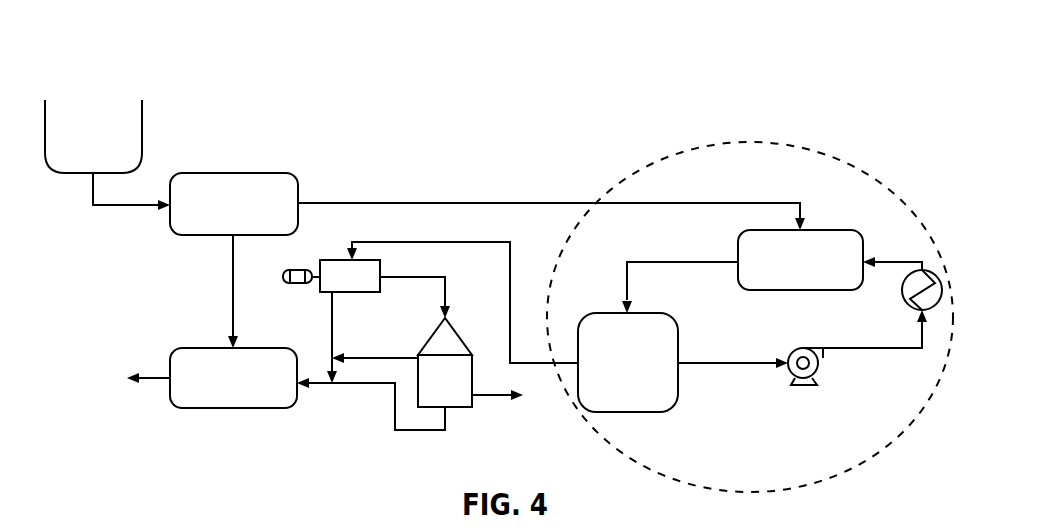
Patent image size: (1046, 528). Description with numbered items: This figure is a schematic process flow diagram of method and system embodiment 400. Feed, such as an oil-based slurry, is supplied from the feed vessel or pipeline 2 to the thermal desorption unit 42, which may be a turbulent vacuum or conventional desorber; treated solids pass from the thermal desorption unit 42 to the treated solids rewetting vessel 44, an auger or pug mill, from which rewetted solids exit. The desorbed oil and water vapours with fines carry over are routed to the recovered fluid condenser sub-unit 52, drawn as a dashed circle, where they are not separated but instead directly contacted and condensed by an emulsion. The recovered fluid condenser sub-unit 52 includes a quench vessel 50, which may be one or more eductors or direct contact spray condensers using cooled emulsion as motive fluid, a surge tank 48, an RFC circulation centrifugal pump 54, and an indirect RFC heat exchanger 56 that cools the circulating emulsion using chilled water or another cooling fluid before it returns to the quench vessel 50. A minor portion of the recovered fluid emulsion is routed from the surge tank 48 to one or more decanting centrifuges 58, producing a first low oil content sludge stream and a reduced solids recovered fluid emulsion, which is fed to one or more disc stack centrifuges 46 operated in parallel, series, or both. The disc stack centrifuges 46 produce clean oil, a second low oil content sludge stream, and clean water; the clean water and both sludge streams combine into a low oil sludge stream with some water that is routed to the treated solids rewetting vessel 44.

The method and system embodiment 400 is at (616, 78).
The feed vessel or pipeline 2 is at (142, 136).
The thermal desorption unit 42 is at (233, 173).
The decanting centrifuge 58 is at (345, 260).
The disc stack centrifuge 46 is at (437, 330).
The treated solids rewetting vessel 44 is at (233, 408).
The recovered fluid condenser sub-unit 52 is at (805, 148).
The quench vessel 50 is at (830, 230).
The surge tank 48 is at (655, 313).
The RFC circulation centrifugal pump 54 is at (805, 385).
The RFC heat exchanger 56 is at (902, 292).